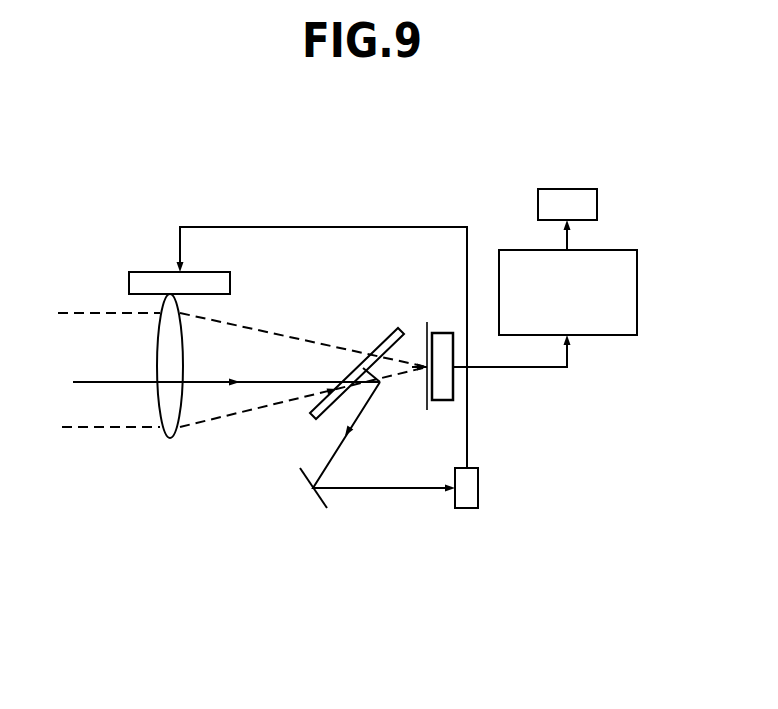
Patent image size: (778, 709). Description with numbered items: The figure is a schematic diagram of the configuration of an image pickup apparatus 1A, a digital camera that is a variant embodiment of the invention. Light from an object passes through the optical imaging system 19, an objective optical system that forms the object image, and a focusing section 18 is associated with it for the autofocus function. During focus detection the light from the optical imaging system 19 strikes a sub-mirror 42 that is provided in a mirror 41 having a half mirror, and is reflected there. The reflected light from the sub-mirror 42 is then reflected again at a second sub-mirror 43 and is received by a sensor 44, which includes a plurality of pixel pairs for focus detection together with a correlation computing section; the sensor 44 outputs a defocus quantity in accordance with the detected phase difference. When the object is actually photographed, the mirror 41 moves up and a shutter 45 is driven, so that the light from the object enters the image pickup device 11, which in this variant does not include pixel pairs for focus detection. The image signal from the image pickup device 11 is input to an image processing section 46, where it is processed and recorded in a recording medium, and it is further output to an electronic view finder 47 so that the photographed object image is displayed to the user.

The image pickup apparatus 1A is at (183, 176).
The focusing section 18 is at (138, 268).
The optical imaging system 19 is at (170, 440).
The mirror 41 is at (378, 337).
The sub-mirror 42 is at (381, 384).
The sub-mirror 43 is at (322, 502).
The sensor 44 is at (480, 485).
The shutter 45 is at (423, 316).
The image pickup device 11 is at (440, 332).
The image processing section 46 is at (608, 338).
The electronic view finder (EVF) 47 is at (600, 200).